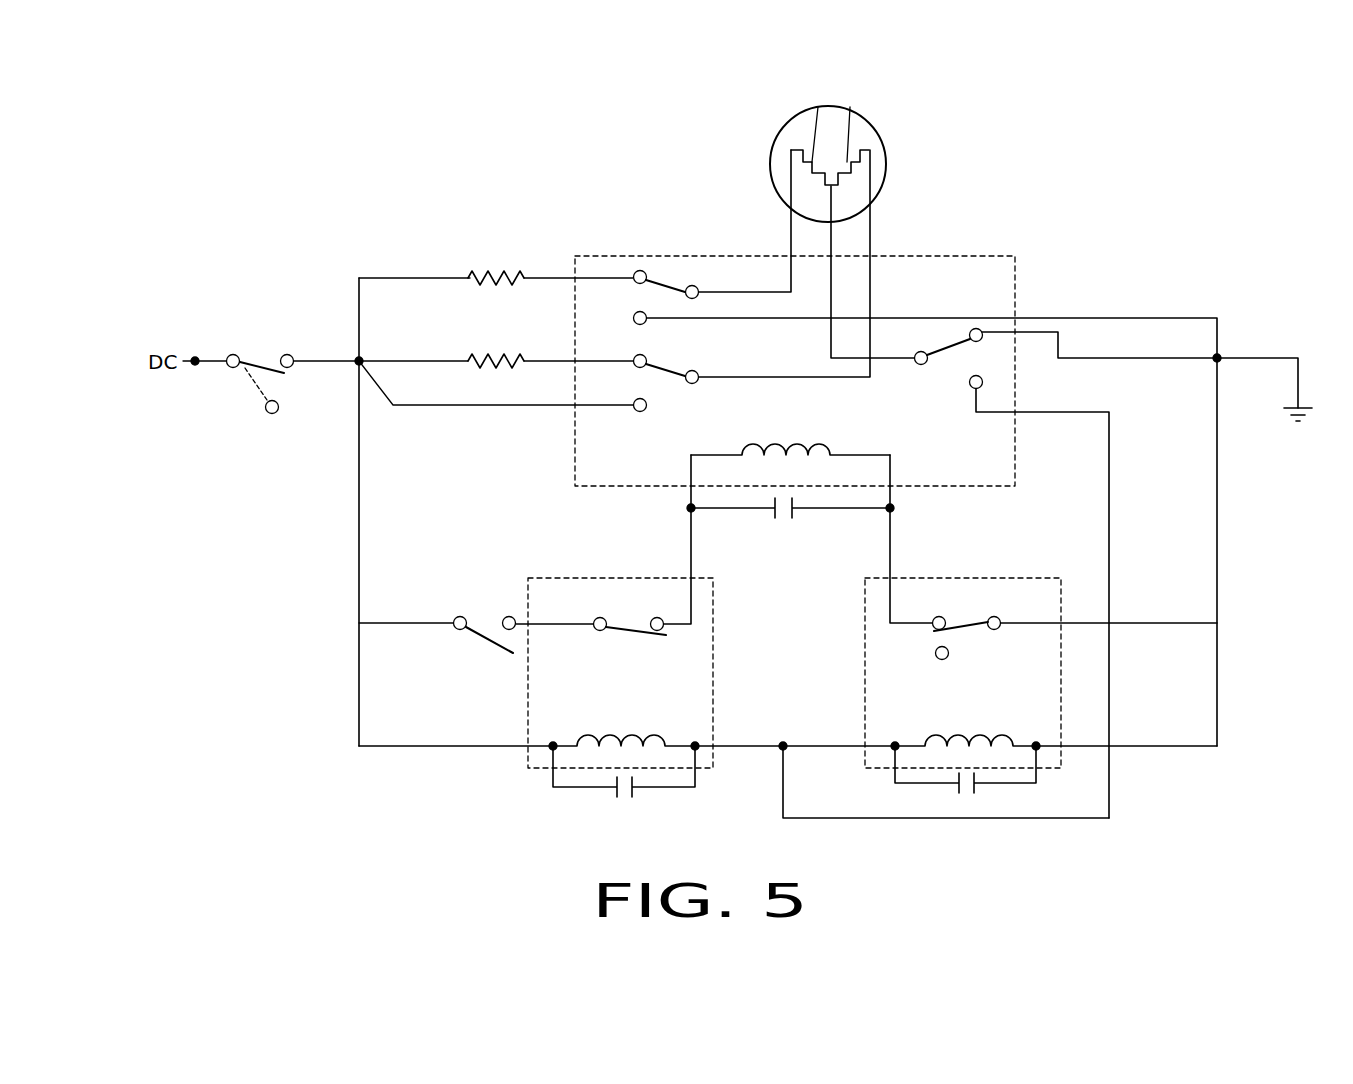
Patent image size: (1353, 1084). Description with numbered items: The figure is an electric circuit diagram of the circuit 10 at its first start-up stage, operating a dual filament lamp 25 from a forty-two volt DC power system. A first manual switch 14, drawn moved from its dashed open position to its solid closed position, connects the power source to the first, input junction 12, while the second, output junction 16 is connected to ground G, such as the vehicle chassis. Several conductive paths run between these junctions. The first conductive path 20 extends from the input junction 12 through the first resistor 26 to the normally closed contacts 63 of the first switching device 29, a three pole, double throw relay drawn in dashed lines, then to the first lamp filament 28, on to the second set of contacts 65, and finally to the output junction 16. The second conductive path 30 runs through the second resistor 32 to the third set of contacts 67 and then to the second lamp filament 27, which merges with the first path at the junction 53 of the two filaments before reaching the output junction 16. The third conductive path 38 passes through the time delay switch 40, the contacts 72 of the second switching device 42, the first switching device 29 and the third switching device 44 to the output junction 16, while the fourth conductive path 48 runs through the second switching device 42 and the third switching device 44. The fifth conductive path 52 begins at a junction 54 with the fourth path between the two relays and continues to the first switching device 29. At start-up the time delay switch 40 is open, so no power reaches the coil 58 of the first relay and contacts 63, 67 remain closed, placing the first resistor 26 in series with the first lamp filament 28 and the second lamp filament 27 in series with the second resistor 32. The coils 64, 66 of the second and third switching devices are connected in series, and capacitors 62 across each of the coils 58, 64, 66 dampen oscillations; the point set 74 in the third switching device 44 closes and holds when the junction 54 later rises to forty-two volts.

The circuit 10 is at (357, 297).
The first junction 12 is at (352, 352).
The first manual switch 14 is at (260, 345).
The second junction 16 is at (1220, 355).
The first conductive path 20 is at (546, 272).
The lamp 25 is at (882, 148).
The first resistor 26 is at (495, 268).
The second lamp filament 27 is at (850, 107).
The first lamp filament 28 is at (818, 108).
The first switching device 29 is at (960, 254).
The second conductive path 30 is at (552, 365).
The second resistor 32 is at (486, 353).
The third conductive path 38 is at (690, 555).
The time delay switch 40 is at (487, 642).
The second switching device 42 is at (573, 578).
The third switching device 44 is at (937, 578).
The fourth conductive path 48 is at (478, 748).
The fifth conductive path 52 is at (962, 820).
The junction of the first and second lamp filaments 53 is at (831, 190).
The junction 54 is at (783, 735).
The coil 58 is at (774, 443).
The capacitors 62 is at (796, 512).
The contacts 63 is at (664, 288).
The coil 64 is at (607, 738).
The second set of contacts 65 is at (946, 358).
The coil 66 is at (967, 738).
The third set of contacts 67 is at (663, 370).
The relay contact 72 is at (659, 618).
The point set 74 is at (942, 618).